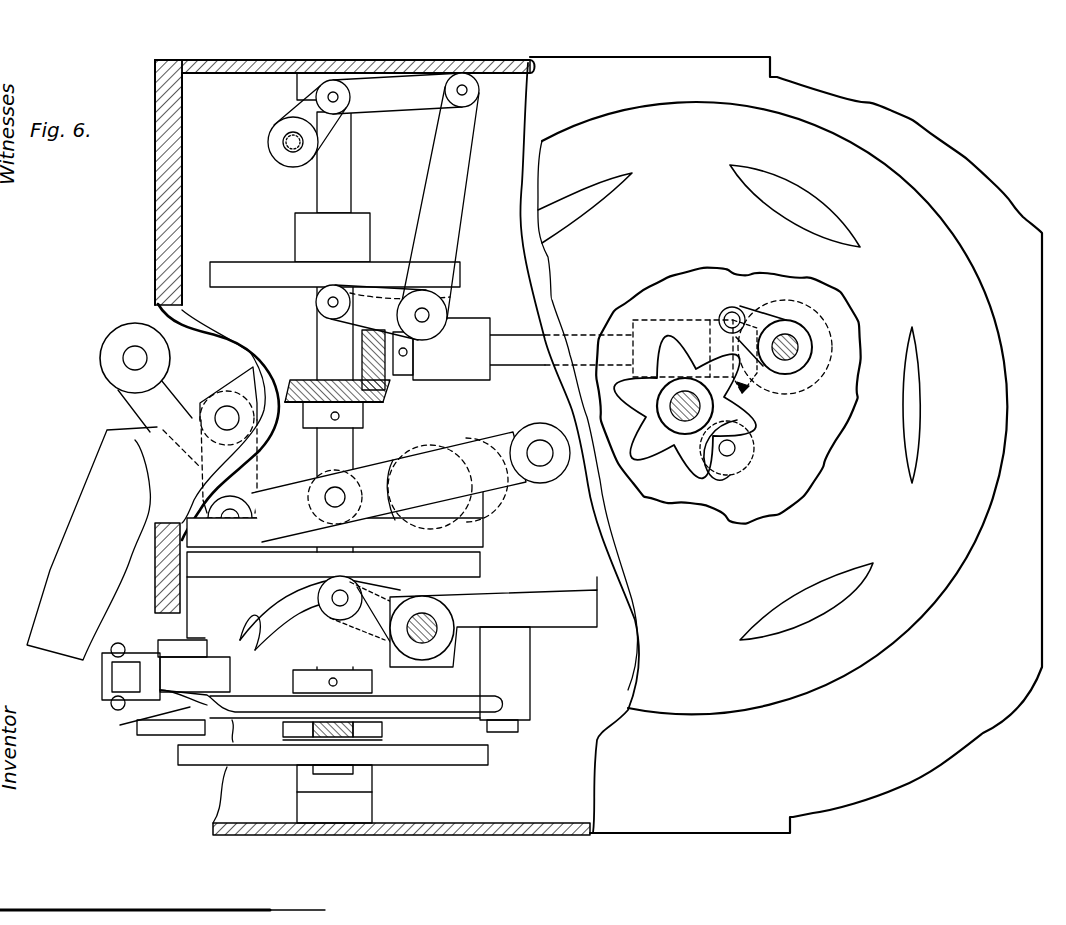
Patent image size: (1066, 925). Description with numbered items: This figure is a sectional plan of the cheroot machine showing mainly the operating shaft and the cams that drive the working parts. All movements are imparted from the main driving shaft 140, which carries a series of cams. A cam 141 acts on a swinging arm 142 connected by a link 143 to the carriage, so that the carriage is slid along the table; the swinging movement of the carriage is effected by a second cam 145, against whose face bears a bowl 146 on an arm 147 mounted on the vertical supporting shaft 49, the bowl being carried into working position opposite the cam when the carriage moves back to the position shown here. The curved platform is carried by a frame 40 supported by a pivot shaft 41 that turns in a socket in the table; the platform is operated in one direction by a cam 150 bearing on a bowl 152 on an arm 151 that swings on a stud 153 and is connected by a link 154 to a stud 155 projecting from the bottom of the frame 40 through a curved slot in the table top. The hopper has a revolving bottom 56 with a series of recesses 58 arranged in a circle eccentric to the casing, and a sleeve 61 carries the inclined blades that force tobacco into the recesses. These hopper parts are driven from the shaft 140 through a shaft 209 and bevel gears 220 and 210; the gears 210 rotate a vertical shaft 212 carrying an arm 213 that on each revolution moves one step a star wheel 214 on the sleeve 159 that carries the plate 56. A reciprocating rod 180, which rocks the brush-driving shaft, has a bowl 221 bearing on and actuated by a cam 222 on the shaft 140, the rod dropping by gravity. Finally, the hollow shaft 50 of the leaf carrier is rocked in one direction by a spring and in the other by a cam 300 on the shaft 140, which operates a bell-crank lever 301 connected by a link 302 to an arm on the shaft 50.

The frame 40 is at (92, 543).
The pivot shaft 41 is at (120, 360).
The vertical supporting shaft 49 is at (442, 624).
The hollow shaft 50 is at (285, 152).
The revolving bottom 56 is at (598, 446).
The recesses 58 is at (729, 402).
The sleeve 61 is at (673, 413).
The main driving shaft 140 is at (352, 192).
The cam 141 is at (185, 709).
The swinging arm 142 is at (104, 685).
The link 143 is at (418, 692).
The cam 145 is at (333, 595).
The bowl 146 is at (343, 588).
The arm 147 is at (350, 627).
The cam 150 is at (470, 528).
The arm 151 is at (389, 487).
The bowl 152 is at (325, 500).
The stud 153 is at (542, 462).
The link 154 is at (258, 482).
The stud 155 is at (235, 410).
The sleeve 159 is at (682, 452).
The reciprocating rod 180 is at (352, 730).
The shaft 209 is at (540, 365).
The bevel gears 210 is at (737, 308).
The vertical shaft 212 is at (798, 342).
The arm 213 is at (770, 315).
The star wheel 214 is at (748, 422).
The bevel gear 220 is at (390, 398).
The bowl 221 is at (332, 776).
The cam 222 is at (283, 768).
The cam 300 is at (335, 268).
The bell-crank lever 301 is at (462, 230).
The link 302 is at (388, 93).